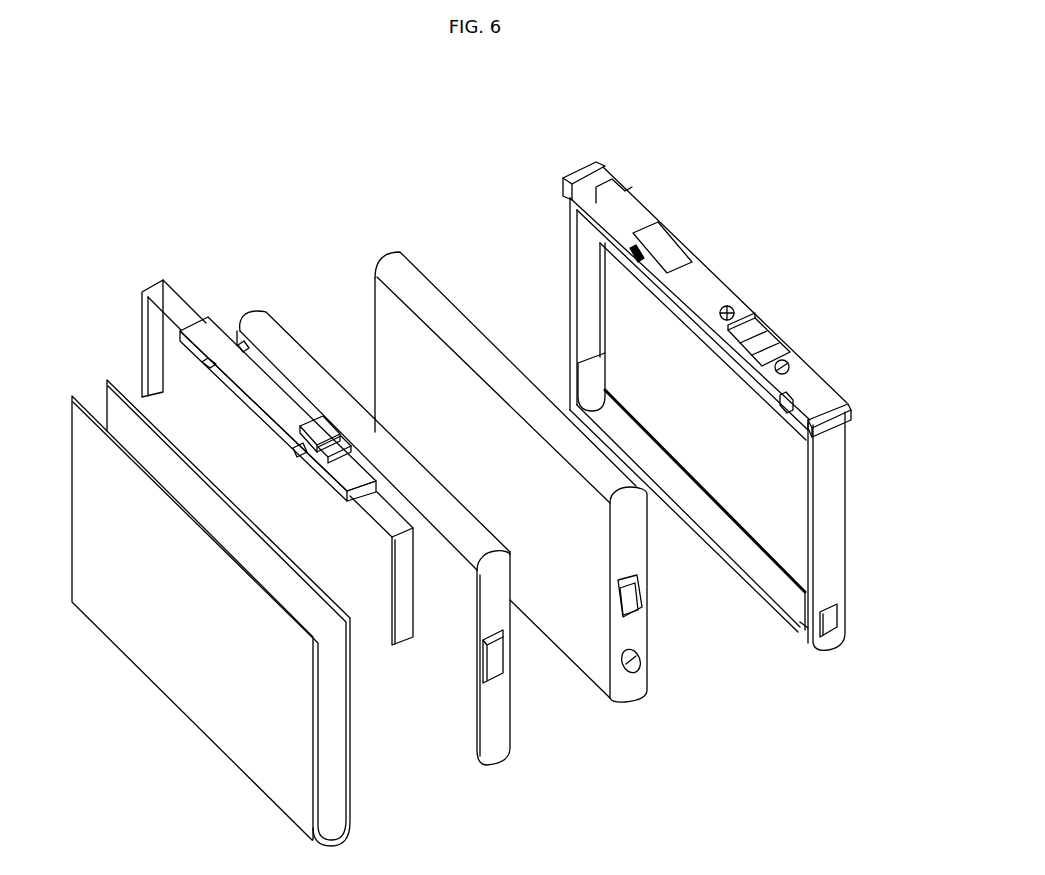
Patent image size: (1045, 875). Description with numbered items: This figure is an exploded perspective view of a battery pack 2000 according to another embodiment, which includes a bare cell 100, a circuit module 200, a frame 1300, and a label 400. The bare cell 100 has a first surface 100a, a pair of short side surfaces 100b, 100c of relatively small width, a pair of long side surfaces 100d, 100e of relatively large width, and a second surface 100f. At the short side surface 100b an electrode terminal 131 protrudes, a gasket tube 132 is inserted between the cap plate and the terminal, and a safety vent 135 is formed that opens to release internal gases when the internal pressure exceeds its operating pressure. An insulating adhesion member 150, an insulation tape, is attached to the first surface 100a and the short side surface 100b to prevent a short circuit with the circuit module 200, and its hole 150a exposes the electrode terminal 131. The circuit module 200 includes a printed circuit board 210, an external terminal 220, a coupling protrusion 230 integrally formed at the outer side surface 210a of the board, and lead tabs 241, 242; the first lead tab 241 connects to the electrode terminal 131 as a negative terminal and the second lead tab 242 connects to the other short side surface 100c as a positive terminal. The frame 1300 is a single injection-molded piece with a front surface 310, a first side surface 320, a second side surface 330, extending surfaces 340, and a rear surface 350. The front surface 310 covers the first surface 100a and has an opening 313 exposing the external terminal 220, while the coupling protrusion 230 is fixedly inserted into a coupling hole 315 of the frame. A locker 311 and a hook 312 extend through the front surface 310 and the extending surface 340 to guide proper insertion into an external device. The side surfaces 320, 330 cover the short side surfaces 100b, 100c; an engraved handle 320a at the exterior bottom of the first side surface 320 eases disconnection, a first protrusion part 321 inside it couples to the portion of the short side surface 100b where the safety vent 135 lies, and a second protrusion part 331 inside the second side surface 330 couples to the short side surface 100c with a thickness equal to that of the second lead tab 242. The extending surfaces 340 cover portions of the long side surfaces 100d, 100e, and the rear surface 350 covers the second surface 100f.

The battery pack 2000 is at (110, 140).
The label 400 is at (84, 386).
The first lead tab 241 is at (155, 292).
The second lead tab 242 is at (402, 633).
The circuit module 200 is at (278, 419).
The printed circuit board 210 is at (255, 387).
The outer side surface 210a is at (348, 494).
The external terminal 220 is at (287, 434).
The coupling protrusion 230 is at (295, 455).
The insulating adhesion member 150 is at (373, 538).
The hole 150a is at (485, 668).
The bare cell 100 is at (499, 470).
The first surface 100a is at (420, 290).
The short side surface 100b is at (656, 616).
The short side surface 100c is at (375, 300).
The long side surface 100d is at (415, 345).
The long side surface 100e is at (490, 333).
The second surface 100f is at (537, 627).
The electrode terminal 131 is at (637, 587).
The gasket tube 132 is at (633, 572).
The safety vent 135 is at (637, 652).
The frame 1300 is at (707, 390).
The front surface 310 is at (721, 290).
The locker 311 is at (823, 390).
The hook 312 is at (608, 190).
The opening 313 is at (757, 320).
The coupling hole 315 is at (770, 340).
The second side surface 330 is at (570, 215).
The second protrusion part 331 is at (600, 380).
The extending surfaces 340 is at (570, 263).
The rear surface 350 is at (762, 598).
The first side surface 320 is at (845, 543).
The handle 320a is at (833, 627).
The first protrusion part 321 is at (801, 625).